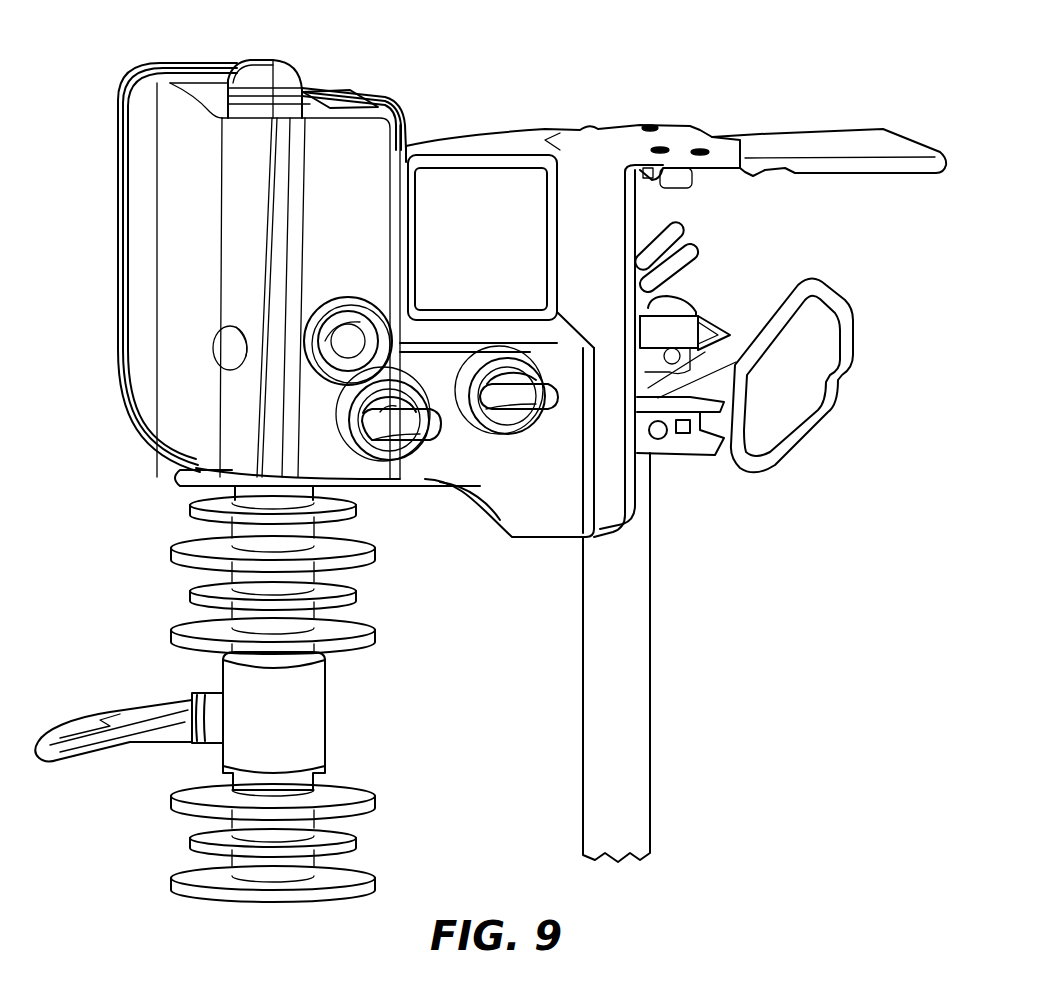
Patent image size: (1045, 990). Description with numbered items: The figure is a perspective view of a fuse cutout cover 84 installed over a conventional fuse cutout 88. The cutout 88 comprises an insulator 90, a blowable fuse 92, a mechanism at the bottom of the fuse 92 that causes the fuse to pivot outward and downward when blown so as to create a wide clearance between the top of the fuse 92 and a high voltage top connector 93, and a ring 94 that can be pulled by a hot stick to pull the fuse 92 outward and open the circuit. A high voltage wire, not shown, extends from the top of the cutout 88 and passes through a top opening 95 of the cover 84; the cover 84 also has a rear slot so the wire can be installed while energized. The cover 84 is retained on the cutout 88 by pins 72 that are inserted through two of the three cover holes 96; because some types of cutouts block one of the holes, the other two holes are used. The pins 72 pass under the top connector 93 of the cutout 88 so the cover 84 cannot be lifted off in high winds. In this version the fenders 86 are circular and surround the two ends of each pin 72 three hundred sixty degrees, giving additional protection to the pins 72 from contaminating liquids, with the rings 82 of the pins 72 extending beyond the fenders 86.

The pin 72 is at (517, 408).
The ring 82 is at (497, 405).
The fuse cutout cover 84 is at (665, 93).
The fender 86 is at (387, 458).
The fuse cutout 88 is at (112, 645).
The insulator 90 is at (378, 796).
The blowable fuse 92 is at (626, 722).
The high voltage top connector 93 is at (682, 305).
The ring 94 is at (858, 362).
The top opening 95 is at (243, 72).
The cover hole 96 is at (345, 340).